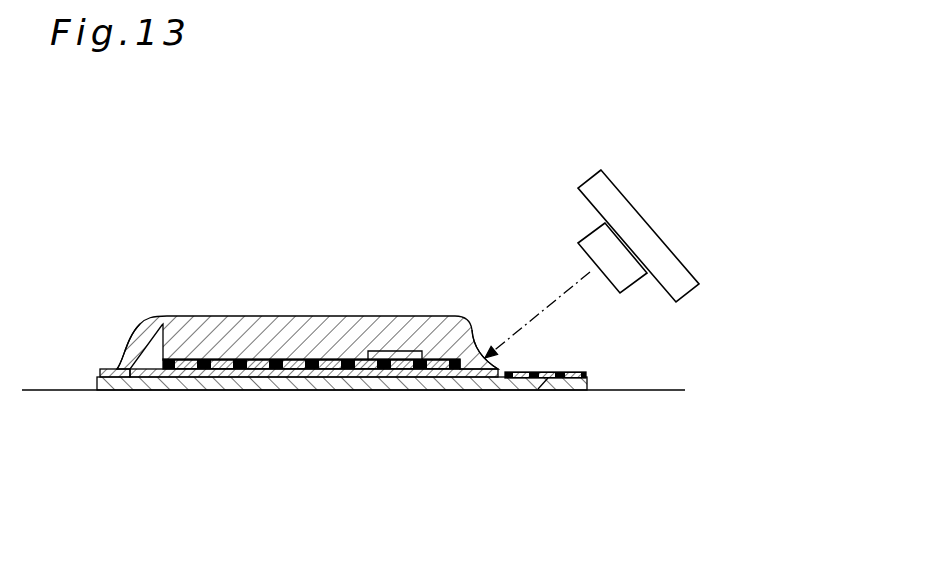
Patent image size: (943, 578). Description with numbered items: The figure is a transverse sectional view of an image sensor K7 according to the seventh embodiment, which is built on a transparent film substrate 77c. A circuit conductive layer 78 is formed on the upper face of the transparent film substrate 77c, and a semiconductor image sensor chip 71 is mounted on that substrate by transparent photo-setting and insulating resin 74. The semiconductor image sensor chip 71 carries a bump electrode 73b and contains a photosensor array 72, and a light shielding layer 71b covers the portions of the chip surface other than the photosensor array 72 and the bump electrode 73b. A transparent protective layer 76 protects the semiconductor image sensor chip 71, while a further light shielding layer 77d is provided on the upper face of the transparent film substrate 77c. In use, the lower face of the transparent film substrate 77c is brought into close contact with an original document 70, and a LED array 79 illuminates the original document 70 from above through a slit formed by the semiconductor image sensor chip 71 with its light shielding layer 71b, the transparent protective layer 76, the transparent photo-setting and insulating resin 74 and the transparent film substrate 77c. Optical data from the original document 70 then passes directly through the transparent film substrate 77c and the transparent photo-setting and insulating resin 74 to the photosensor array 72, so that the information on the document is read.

The image sensor K7 is at (357, 207).
The original document 70 is at (222, 420).
The semiconductor image sensor chip 71 is at (383, 330).
The light shielding layer 71b is at (300, 370).
The photosensor array 72 is at (413, 372).
The bump electrode 73b is at (238, 359).
The transparent photo-setting and insulating resin 74 is at (397, 362).
The transparent protective layer 76 is at (472, 335).
The transparent film substrate 77c is at (543, 380).
The light shielding layer 77d is at (567, 370).
The circuit conductive layer 78 is at (118, 371).
The LED array 79 is at (650, 240).